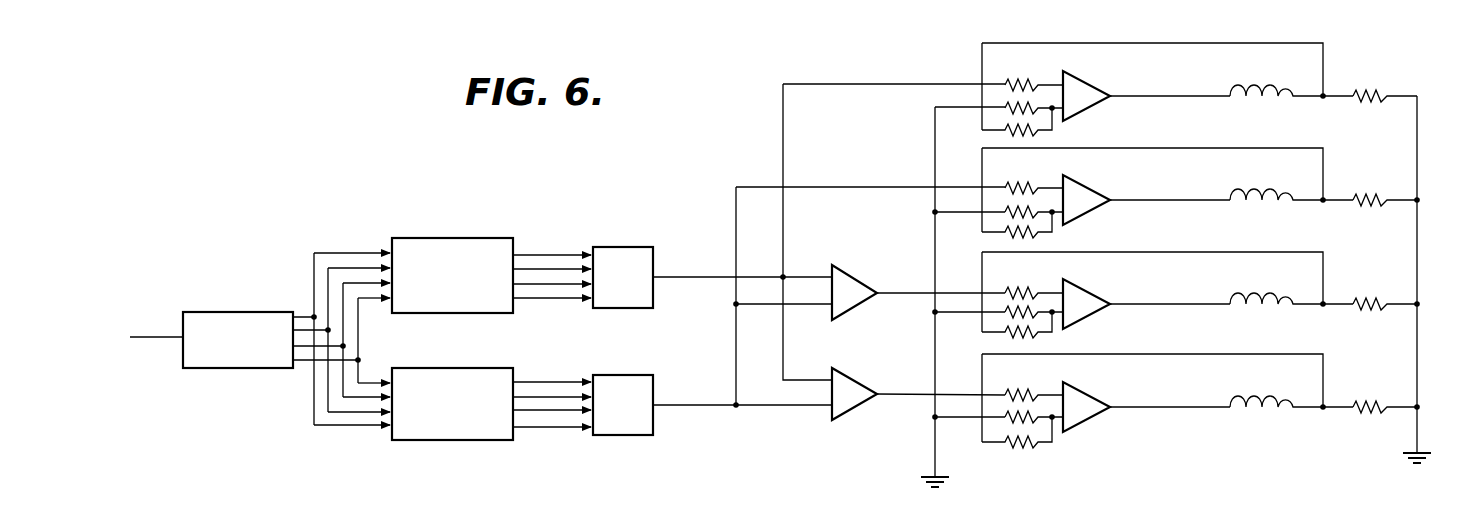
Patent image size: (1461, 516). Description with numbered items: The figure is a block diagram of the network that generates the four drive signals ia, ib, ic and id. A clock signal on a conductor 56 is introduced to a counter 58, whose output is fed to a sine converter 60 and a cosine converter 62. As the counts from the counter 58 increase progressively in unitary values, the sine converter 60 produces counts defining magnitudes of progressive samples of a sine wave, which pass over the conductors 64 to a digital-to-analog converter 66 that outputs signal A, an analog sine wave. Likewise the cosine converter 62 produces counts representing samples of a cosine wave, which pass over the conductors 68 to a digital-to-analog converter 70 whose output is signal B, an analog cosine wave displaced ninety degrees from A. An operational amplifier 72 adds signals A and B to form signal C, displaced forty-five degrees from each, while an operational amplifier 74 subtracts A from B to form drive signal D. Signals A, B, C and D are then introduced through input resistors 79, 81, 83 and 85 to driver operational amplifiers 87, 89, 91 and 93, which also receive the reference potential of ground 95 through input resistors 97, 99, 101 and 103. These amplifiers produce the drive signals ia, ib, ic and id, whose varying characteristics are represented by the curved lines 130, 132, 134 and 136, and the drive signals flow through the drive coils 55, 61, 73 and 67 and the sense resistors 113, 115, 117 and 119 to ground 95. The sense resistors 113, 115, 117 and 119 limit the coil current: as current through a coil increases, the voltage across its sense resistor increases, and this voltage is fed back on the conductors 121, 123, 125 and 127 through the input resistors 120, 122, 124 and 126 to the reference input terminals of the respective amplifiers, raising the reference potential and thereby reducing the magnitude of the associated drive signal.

The conductor 56 is at (150, 337).
The counter 58 is at (255, 312).
The sine converter 60 is at (458, 238).
The cosine converter 62 is at (471, 368).
The conductors 64 is at (565, 245).
The digital-to-analog converter 66 is at (622, 247).
The conductors 68 is at (567, 380).
The digital-to-analog converter 70 is at (622, 375).
The operational amplifier 72 is at (858, 274).
The operational amplifier 74 is at (855, 380).
The input resistor 79 is at (1016, 85).
The input resistor 81 is at (1016, 188).
The input resistor 83 is at (1016, 293).
The input resistor 85 is at (1018, 395).
The operational amplifier 87 is at (1085, 84).
The operational amplifier 89 is at (1085, 187).
The operational amplifier 91 is at (1085, 291).
The operational amplifier 93 is at (1087, 390).
The input resistor 97 is at (1010, 108).
The input resistor 99 is at (1010, 212).
The input resistor 101 is at (1010, 312).
The input resistor 103 is at (1012, 417).
The input resistor 120 is at (1040, 136).
The input resistor 122 is at (1040, 238).
The input resistor 124 is at (1040, 338).
The input resistor 126 is at (1027, 446).
The conductor 121 is at (1260, 43).
The conductor 123 is at (1258, 148).
The conductor 125 is at (1258, 252).
The conductor 127 is at (1258, 354).
The curved line 130 is at (1135, 96).
The curved line 132 is at (1135, 200).
The curved line 134 is at (1135, 304).
The curved line 136 is at (1135, 407).
The drive coil 55 is at (1250, 86).
The drive coil 61 is at (1250, 190).
The drive coil 73 is at (1250, 294).
The drive coil 67 is at (1250, 397).
The sense resistor 113 is at (1374, 92).
The sense resistor 115 is at (1387, 170).
The sense resistor 117 is at (1381, 301).
The sense resistor 119 is at (1380, 403).
The ground 95 is at (1410, 453).